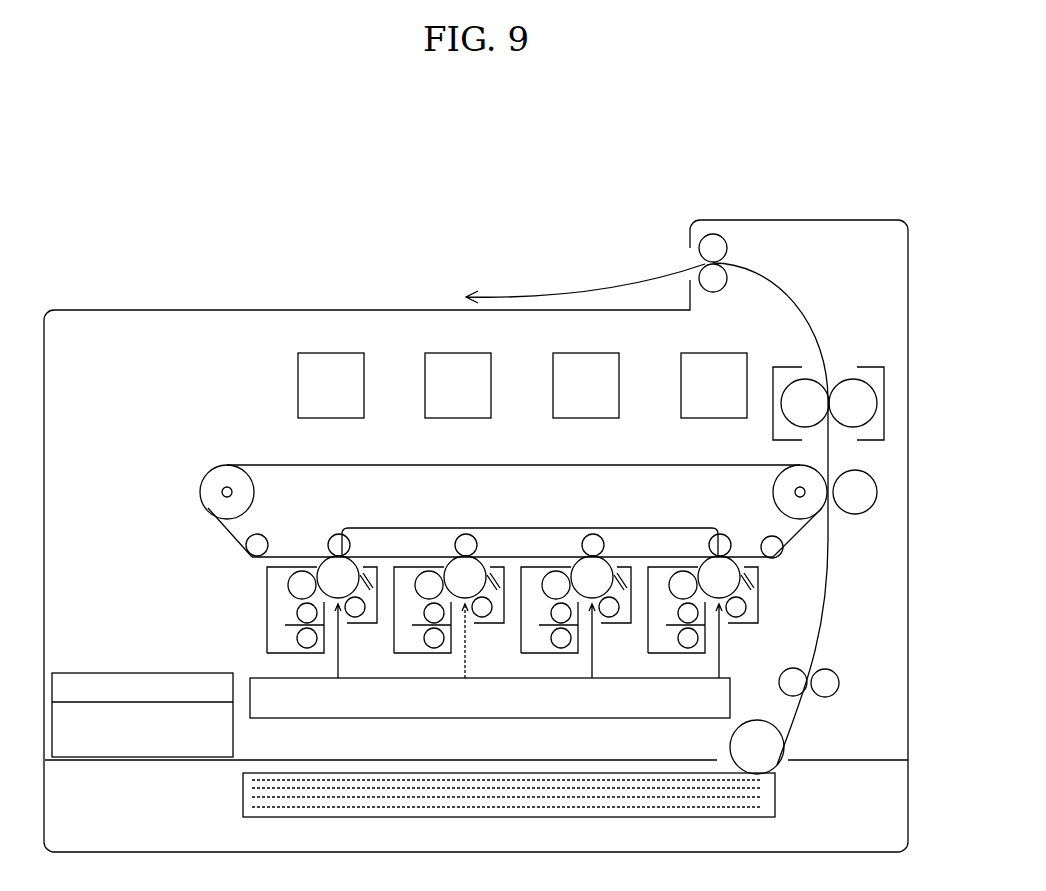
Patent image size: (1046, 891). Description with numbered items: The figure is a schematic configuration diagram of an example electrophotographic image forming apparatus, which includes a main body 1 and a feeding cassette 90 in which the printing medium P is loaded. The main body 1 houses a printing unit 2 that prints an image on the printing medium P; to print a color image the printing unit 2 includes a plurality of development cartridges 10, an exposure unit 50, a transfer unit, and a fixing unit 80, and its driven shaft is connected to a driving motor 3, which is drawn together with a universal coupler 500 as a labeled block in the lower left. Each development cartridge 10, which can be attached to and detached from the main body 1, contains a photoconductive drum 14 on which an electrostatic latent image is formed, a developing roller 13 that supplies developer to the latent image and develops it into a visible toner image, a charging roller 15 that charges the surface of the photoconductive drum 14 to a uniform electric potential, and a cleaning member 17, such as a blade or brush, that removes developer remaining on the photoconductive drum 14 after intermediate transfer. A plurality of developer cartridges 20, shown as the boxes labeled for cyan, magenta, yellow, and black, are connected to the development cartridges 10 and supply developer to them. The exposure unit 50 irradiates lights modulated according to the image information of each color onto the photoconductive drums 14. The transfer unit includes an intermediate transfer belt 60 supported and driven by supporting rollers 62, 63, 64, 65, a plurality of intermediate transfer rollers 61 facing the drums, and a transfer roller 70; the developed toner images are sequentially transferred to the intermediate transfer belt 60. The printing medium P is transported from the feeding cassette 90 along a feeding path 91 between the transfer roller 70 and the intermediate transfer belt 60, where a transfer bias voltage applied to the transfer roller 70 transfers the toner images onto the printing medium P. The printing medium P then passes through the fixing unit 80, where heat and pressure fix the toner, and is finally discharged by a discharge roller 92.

The main body 1 is at (920, 705).
The printing unit 2 is at (882, 457).
The driving motor 3 is at (103, 672).
The development cartridge 10 is at (258, 620).
The developing roller 13 is at (295, 590).
The photoconductive drum 14 is at (318, 566).
The charging roller 15 is at (355, 617).
The cleaning member 17 is at (372, 592).
The developer cartridge 20 is at (288, 376).
The exposure unit 50 is at (272, 672).
The intermediate transfer belt 60 is at (268, 463).
The intermediate transfer roller 61 is at (500, 526).
The supporting roller 62 is at (205, 482).
The supporting roller 63 is at (775, 487).
The supporting roller 64 is at (260, 534).
The supporting roller 65 is at (762, 538).
The transfer roller 70 is at (878, 505).
The fixing unit 80 is at (885, 390).
The feeding cassette 90 is at (910, 812).
The feeding path 91 is at (822, 612).
The discharge roller 92 is at (713, 234).
The universal coupler 500 is at (236, 746).
The printing medium P is at (541, 772).